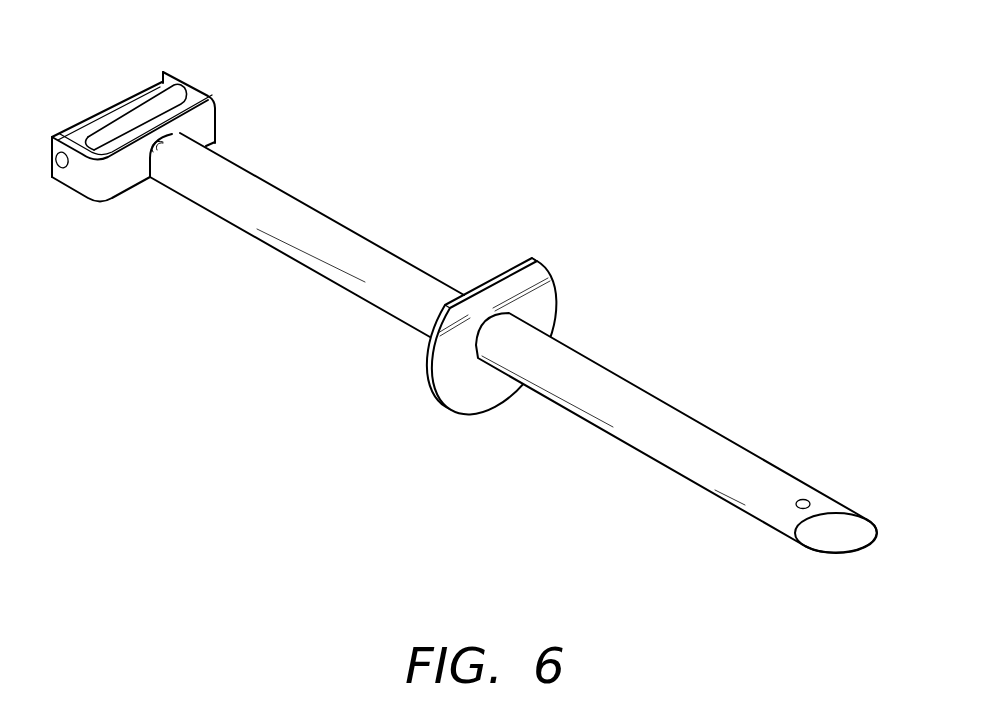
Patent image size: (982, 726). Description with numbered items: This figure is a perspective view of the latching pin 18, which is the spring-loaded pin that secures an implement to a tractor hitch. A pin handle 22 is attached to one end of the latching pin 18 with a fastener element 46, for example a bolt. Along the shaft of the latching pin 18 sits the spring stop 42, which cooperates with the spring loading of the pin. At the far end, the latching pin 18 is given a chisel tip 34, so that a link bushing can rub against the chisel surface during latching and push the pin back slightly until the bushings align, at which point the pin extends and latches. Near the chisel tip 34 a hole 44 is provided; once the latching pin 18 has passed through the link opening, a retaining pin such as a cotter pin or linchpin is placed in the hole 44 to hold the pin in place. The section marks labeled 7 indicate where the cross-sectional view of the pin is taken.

The latching pin 18 is at (612, 393).
The pin handle 22 is at (214, 128).
The chisel tip 34 is at (822, 542).
The spring stop 42 is at (477, 397).
The hole 44 is at (797, 498).
The fastener element 46 is at (125, 147).
The section line for FIG. 7 is at (567, 195).